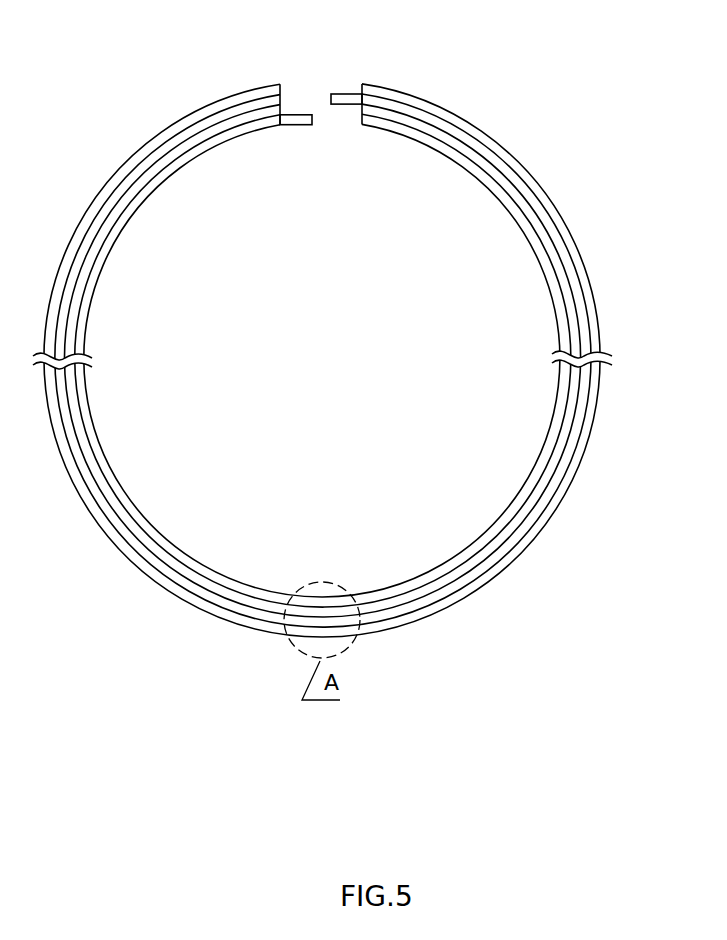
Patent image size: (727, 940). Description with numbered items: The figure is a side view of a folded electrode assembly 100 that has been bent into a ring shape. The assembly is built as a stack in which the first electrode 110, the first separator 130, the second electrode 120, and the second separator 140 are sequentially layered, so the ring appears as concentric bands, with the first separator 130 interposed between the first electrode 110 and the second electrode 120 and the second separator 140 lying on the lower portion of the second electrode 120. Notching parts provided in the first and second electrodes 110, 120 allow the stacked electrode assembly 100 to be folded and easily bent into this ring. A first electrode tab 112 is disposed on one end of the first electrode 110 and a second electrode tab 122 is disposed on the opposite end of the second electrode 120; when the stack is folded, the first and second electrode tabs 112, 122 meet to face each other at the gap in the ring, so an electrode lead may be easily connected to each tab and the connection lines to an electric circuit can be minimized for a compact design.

The electrode assembly 100 is at (361, 334).
The first electrode 110 is at (513, 168).
The first electrode tab 112 is at (294, 113).
The second electrode 120 is at (547, 243).
The second electrode tab 122 is at (345, 92).
The first separator 130 is at (532, 202).
The second separator 140 is at (553, 282).